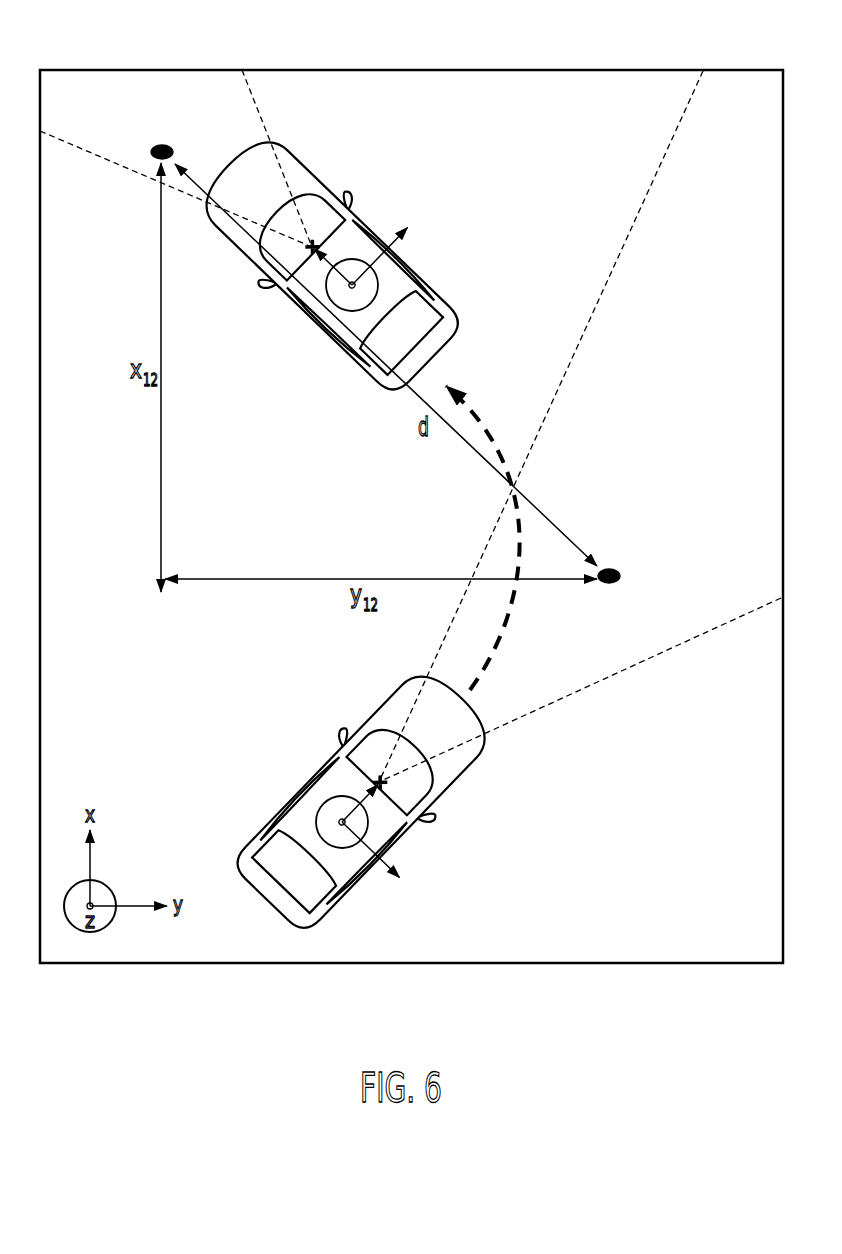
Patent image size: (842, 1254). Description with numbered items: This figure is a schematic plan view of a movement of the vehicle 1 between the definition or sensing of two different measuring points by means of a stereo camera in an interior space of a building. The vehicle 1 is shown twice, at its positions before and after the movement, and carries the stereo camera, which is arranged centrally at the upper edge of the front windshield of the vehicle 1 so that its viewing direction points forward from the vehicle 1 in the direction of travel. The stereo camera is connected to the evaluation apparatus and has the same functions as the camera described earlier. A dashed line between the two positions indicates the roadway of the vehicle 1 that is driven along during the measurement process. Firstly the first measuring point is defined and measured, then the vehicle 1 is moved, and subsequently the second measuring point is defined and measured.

The vehicle 1 is at (421, 274).